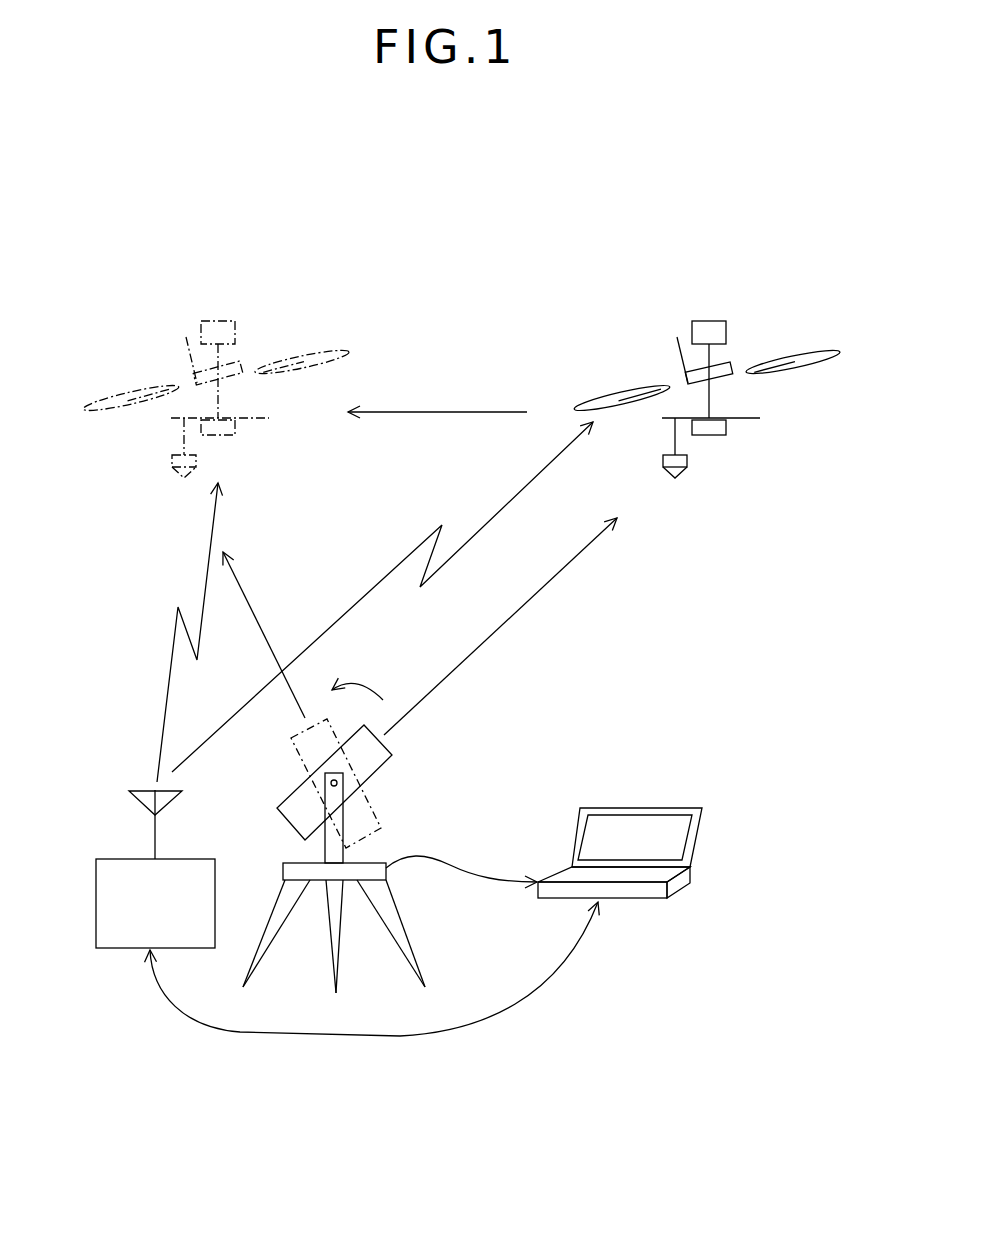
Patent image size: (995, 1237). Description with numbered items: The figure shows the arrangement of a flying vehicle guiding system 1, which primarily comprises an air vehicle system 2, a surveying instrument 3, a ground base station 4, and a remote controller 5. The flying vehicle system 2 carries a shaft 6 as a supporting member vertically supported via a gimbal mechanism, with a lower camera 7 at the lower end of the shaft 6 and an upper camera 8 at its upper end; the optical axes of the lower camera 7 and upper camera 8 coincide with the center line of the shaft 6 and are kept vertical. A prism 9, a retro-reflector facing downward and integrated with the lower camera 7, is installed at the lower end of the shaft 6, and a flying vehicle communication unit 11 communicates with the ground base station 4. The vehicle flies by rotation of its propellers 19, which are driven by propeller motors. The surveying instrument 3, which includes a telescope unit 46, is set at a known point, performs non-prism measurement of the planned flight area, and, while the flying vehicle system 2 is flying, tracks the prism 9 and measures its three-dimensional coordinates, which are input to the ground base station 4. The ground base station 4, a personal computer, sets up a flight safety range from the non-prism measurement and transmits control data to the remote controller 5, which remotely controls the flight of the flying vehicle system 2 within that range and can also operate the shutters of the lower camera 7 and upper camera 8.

The flying vehicle guiding system 1 is at (464, 200).
The flying vehicle system 2 is at (472, 378).
The surveying instrument 3 is at (376, 838).
The ground base station 4 is at (657, 807).
The remote controller 5 is at (115, 857).
The shaft 6 is at (710, 398).
The lower camera 7 is at (713, 437).
The upper camera 8 is at (713, 318).
The prism 9 is at (680, 473).
The flying vehicle communication unit 11 is at (678, 333).
The propellers 19 is at (807, 353).
The telescope unit 46 is at (392, 765).